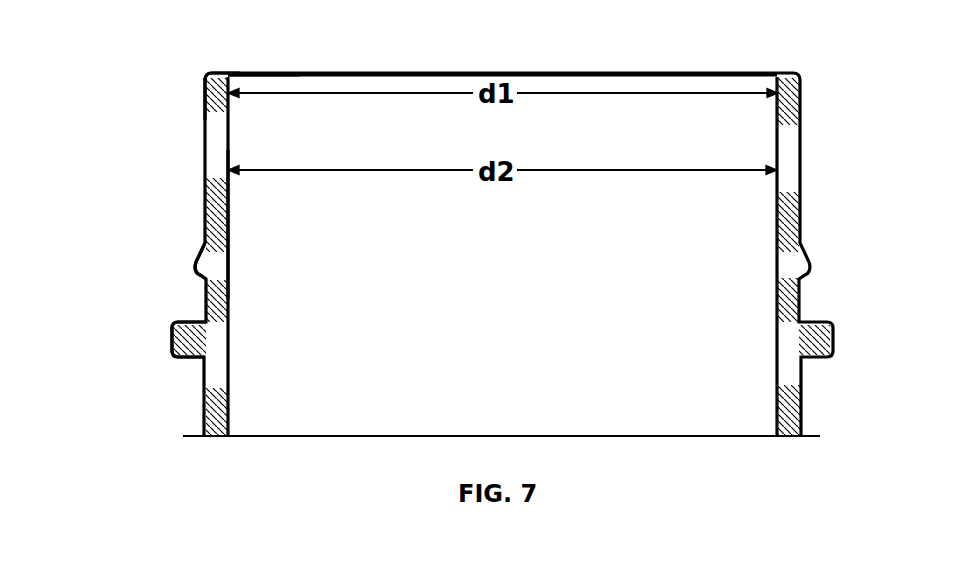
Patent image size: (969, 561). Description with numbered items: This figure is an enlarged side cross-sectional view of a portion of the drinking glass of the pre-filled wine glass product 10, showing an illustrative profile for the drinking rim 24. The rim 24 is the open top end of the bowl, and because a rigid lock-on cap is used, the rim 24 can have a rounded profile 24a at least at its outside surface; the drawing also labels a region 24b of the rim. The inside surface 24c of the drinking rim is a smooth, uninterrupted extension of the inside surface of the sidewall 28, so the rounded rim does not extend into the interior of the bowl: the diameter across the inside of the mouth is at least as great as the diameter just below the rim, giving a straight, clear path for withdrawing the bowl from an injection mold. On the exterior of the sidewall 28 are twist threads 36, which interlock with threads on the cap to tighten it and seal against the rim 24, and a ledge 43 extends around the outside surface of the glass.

The pre-filled wine glass product 10 is at (147, 182).
The drinking rim 24 is at (858, 116).
The rounded profile 24a is at (205, 85).
The rim top surface 24b is at (222, 72).
The inside surface of the drinking rim 24c is at (232, 77).
The sidewall 28 is at (230, 218).
The twist threads 36 is at (197, 267).
The ledge 43 is at (172, 340).